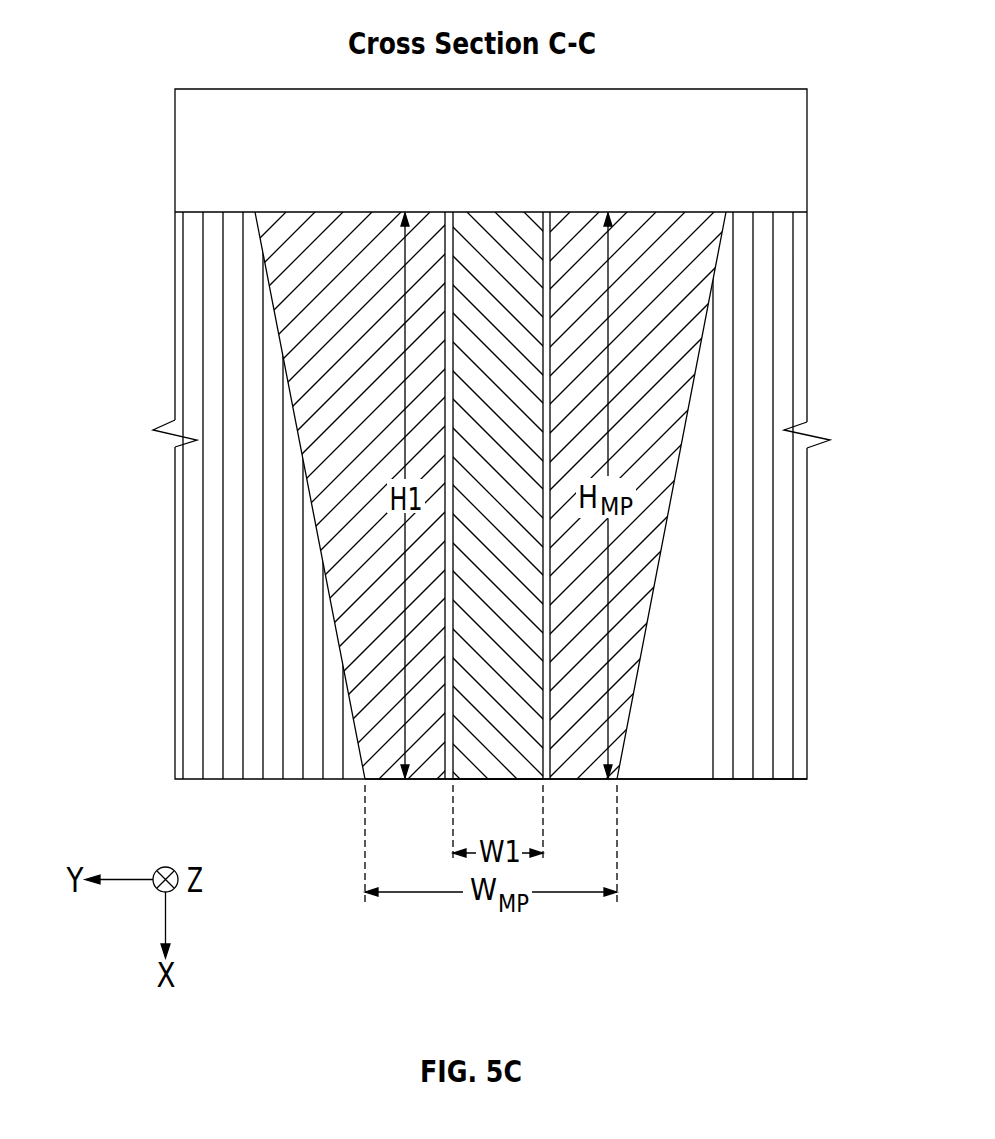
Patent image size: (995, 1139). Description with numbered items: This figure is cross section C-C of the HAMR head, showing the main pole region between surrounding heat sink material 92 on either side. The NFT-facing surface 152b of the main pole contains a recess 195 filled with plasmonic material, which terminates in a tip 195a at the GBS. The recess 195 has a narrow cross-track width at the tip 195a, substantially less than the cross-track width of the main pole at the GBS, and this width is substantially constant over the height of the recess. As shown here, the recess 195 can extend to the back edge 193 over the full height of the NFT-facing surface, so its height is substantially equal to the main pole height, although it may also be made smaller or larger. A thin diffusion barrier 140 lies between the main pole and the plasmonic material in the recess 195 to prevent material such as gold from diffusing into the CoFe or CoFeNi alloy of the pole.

The heat sink material 92 is at (198, 378).
The diffusion barrier 140 is at (447, 212).
The back edge 193 is at (477, 212).
The NFT-facing surface 152b is at (651, 258).
The tip 195a is at (477, 780).
The recess 195 is at (507, 695).
The gas bearing surface GBS is at (718, 782).